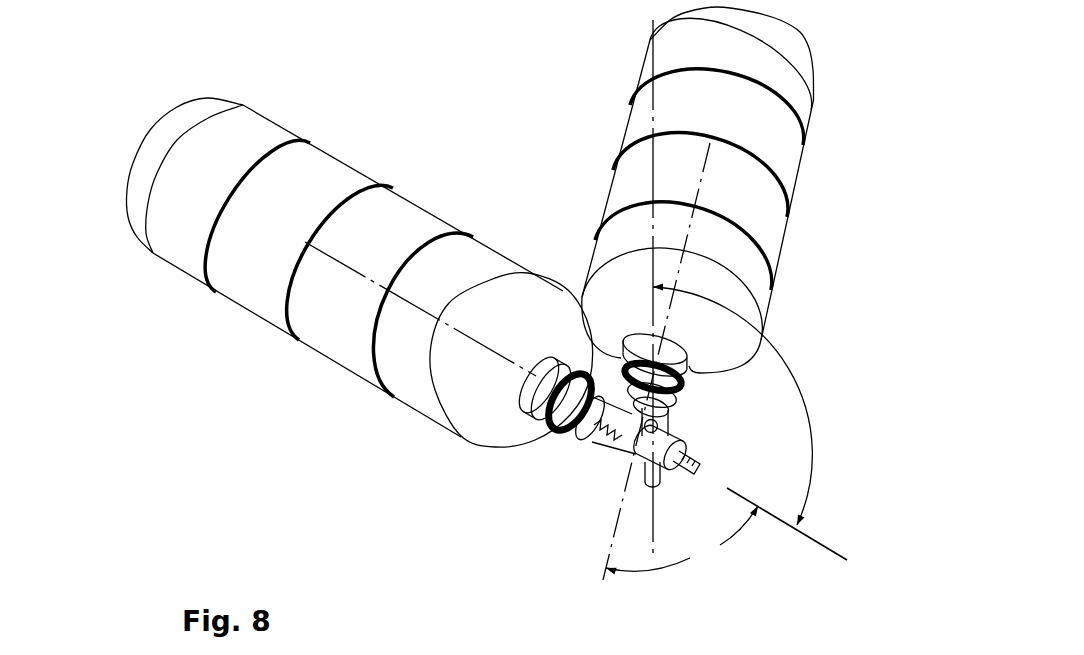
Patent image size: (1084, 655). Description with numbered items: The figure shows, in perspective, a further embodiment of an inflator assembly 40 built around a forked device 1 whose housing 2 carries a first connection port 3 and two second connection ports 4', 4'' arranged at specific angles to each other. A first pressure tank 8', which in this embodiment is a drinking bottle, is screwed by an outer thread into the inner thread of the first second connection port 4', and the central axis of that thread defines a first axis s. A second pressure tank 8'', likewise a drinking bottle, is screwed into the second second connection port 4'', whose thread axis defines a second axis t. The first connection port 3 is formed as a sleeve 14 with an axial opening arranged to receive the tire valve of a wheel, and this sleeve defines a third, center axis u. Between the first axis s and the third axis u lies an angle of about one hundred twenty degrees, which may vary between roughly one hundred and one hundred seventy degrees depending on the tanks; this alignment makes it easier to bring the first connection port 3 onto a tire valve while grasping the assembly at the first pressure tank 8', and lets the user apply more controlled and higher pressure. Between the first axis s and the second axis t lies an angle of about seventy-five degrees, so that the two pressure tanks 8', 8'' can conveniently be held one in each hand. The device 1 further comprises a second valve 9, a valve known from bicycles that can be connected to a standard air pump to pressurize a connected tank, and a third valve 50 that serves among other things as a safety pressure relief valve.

The inflator assembly 40 is at (133, 55).
The first pressure tank 8' is at (322, 296).
The second pressure tank 8'' is at (764, 190).
The first axis s is at (423, 317).
The third axis u is at (650, 113).
The second axis t is at (707, 180).
The first second connection port 4' is at (344, 476).
The second second connection port 4'' is at (514, 225).
The device 1 is at (570, 455).
The housing 2 is at (630, 435).
The first connection port 3 is at (660, 480).
The second valve 9 is at (682, 463).
The sleeve 14 is at (662, 478).
The third valve 50 is at (663, 424).